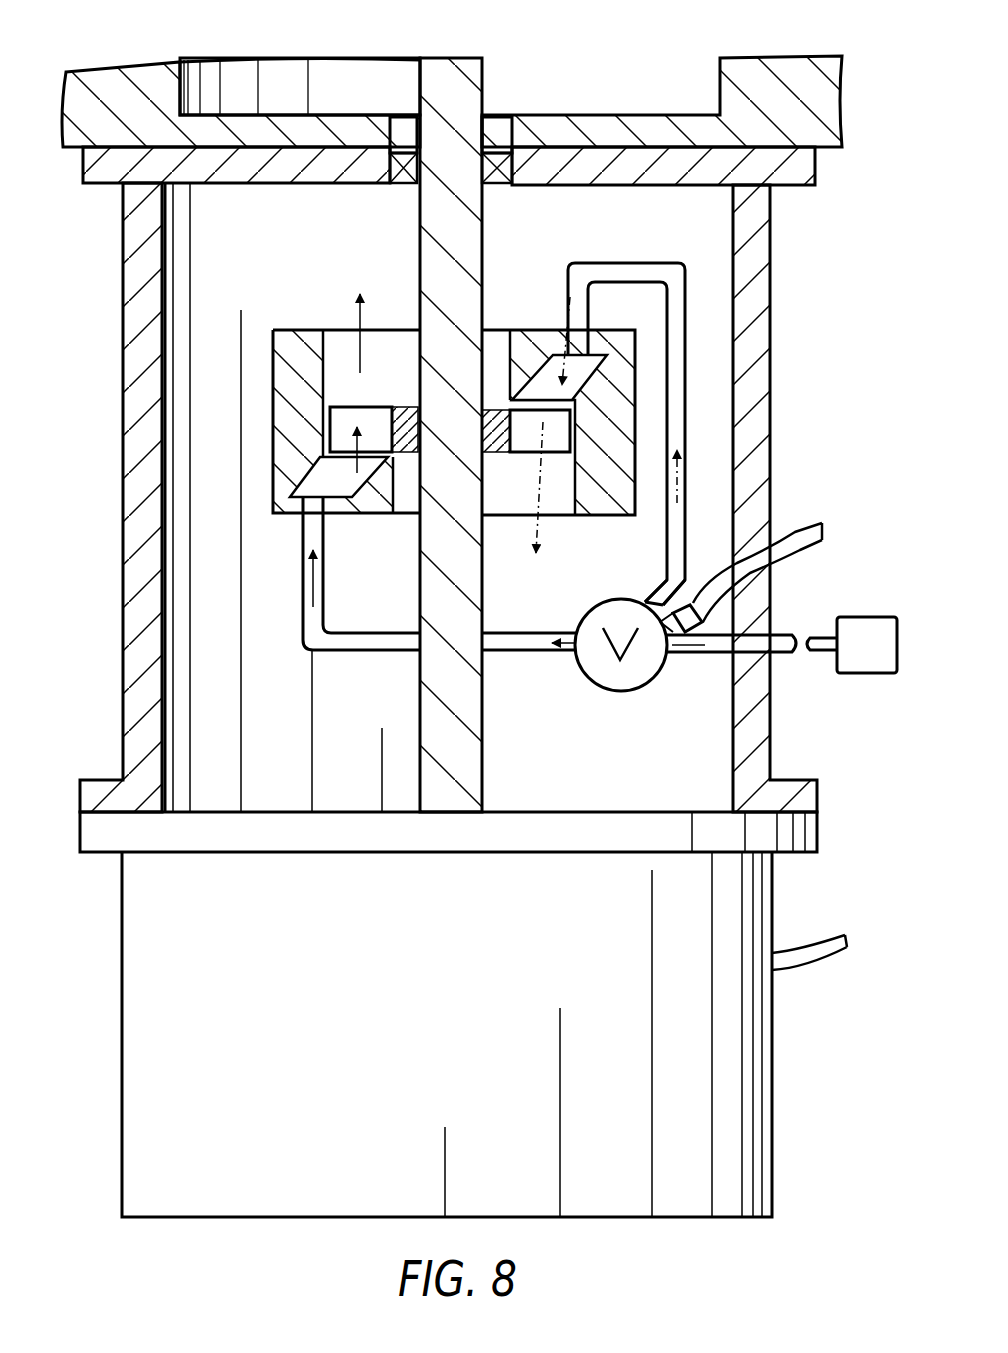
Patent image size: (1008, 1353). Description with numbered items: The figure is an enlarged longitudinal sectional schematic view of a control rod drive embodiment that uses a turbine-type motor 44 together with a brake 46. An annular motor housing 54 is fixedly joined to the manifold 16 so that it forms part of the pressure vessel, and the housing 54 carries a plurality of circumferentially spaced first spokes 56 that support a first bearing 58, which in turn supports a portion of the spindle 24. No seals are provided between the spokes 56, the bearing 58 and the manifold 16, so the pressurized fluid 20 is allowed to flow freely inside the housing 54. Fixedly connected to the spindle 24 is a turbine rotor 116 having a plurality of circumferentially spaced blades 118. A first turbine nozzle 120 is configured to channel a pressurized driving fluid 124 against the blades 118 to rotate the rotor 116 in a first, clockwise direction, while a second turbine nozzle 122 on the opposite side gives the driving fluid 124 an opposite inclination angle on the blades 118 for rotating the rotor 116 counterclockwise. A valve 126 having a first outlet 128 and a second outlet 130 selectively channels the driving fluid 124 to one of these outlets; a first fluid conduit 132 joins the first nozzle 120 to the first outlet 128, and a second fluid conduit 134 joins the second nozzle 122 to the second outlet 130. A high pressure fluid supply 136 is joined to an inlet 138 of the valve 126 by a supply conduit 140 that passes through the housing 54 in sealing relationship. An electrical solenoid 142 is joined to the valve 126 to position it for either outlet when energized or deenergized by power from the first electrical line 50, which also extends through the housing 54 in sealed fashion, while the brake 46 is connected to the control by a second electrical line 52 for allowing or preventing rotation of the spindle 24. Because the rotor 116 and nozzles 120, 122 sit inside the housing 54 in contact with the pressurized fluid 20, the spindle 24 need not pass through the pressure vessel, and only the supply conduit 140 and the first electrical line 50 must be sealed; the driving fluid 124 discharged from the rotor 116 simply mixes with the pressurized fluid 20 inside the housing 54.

The manifold 16 is at (128, 62).
The pressurized fluid 20 is at (272, 75).
The spindle 24 is at (484, 88).
The motor 44 is at (118, 306).
The brake 46 is at (116, 1036).
The first electrical line 50 is at (797, 528).
The second electrical line 52 is at (820, 935).
The motor housing 54 is at (774, 293).
The first spokes 56 is at (622, 186).
The first bearing 58 is at (500, 185).
The turbine rotor 116 is at (498, 460).
The blades 118 is at (376, 405).
The first turbine nozzle 120 is at (548, 370).
The second turbine nozzle 122 is at (313, 483).
The driving fluid 124 is at (636, 600).
The valve 126 is at (600, 691).
The first outlet 128 is at (684, 597).
The second outlet 130 is at (530, 655).
The first fluid conduit 132 is at (689, 363).
The second fluid conduit 134 is at (375, 655).
The high pressure fluid supply 136 is at (888, 664).
The inlet 138 is at (679, 655).
The supply conduit 140 is at (792, 656).
The electrical solenoid 142 is at (703, 627).